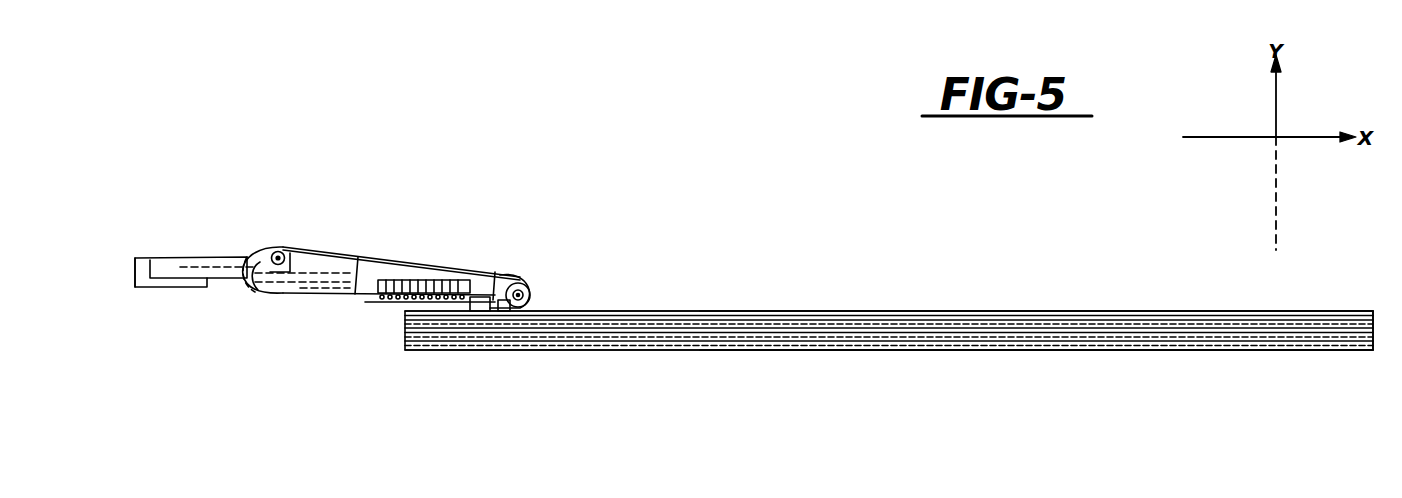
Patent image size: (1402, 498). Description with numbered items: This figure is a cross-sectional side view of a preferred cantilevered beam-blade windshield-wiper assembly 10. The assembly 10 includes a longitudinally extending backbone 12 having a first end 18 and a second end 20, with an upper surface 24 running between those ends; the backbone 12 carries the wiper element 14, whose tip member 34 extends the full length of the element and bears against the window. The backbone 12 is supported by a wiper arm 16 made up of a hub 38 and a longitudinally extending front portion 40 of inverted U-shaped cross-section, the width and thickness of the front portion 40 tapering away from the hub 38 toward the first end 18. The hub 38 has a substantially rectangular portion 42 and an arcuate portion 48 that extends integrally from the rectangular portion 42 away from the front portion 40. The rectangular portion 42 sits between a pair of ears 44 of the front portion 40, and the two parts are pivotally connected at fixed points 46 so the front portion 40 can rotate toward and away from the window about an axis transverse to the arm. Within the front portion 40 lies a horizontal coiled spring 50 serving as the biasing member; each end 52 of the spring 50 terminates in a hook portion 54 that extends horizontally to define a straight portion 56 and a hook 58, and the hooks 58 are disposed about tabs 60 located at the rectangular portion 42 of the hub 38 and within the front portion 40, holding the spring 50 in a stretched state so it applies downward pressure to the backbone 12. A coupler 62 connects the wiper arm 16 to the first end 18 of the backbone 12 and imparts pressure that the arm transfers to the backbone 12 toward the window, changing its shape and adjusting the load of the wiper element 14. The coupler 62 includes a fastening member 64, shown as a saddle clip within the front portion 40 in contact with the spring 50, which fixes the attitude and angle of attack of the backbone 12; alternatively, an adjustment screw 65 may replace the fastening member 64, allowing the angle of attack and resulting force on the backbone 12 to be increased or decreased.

The wiper assembly 10 is at (785, 165).
The backbone 12 is at (897, 311).
The wiper element 14 is at (1023, 351).
The wiper arm 16 is at (382, 222).
The first end 18 is at (652, 311).
The second end 20 is at (1343, 311).
The upper surface 24 is at (1057, 311).
The tip member 34 is at (1213, 351).
The hub 38 is at (160, 258).
The front portion 40 is at (292, 248).
The rectangular portion 42 is at (218, 258).
The ears 44 is at (242, 292).
The fixed points 46 is at (276, 251).
The arcuate portion 48 is at (135, 272).
The coiled spring 50 is at (410, 268).
The end 52 is at (380, 297).
The hook portion 54 is at (505, 272).
The straight portion 56 is at (348, 262).
The hook 58 is at (537, 290).
The tabs 60 is at (530, 280).
The coupler 62 is at (393, 302).
The fastening member 64 is at (432, 311).
The adjustment screw 65 is at (512, 311).